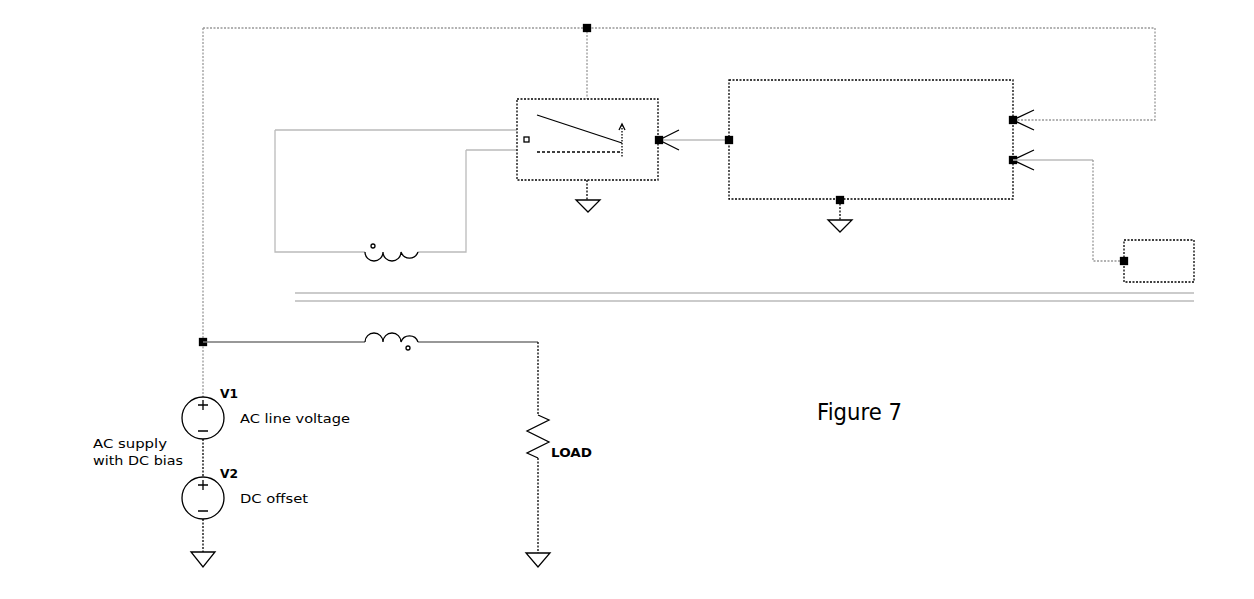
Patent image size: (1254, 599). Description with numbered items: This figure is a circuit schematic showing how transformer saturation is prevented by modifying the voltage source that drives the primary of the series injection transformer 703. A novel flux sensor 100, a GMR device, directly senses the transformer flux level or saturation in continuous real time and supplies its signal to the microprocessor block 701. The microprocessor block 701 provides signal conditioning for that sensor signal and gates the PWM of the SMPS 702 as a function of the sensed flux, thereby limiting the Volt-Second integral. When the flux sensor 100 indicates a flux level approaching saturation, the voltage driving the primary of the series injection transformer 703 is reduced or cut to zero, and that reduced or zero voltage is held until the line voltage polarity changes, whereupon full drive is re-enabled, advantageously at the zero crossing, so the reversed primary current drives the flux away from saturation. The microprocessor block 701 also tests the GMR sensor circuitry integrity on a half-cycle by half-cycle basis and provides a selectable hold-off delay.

The flux sensor 100 is at (1182, 215).
The microprocessor block 701 is at (962, 205).
The SMPS 702 is at (715, 232).
The series injection transformer 703 is at (533, 285).